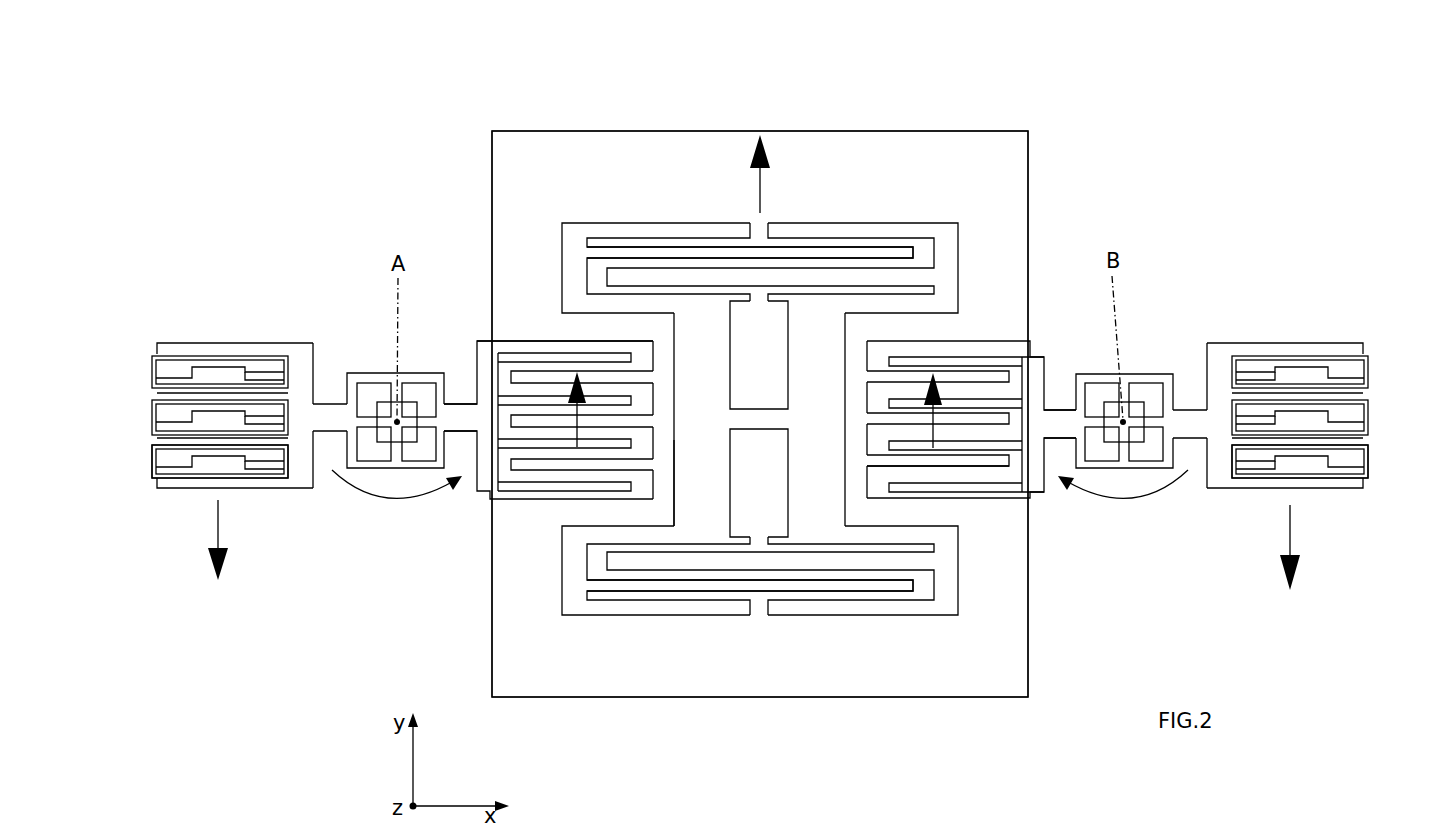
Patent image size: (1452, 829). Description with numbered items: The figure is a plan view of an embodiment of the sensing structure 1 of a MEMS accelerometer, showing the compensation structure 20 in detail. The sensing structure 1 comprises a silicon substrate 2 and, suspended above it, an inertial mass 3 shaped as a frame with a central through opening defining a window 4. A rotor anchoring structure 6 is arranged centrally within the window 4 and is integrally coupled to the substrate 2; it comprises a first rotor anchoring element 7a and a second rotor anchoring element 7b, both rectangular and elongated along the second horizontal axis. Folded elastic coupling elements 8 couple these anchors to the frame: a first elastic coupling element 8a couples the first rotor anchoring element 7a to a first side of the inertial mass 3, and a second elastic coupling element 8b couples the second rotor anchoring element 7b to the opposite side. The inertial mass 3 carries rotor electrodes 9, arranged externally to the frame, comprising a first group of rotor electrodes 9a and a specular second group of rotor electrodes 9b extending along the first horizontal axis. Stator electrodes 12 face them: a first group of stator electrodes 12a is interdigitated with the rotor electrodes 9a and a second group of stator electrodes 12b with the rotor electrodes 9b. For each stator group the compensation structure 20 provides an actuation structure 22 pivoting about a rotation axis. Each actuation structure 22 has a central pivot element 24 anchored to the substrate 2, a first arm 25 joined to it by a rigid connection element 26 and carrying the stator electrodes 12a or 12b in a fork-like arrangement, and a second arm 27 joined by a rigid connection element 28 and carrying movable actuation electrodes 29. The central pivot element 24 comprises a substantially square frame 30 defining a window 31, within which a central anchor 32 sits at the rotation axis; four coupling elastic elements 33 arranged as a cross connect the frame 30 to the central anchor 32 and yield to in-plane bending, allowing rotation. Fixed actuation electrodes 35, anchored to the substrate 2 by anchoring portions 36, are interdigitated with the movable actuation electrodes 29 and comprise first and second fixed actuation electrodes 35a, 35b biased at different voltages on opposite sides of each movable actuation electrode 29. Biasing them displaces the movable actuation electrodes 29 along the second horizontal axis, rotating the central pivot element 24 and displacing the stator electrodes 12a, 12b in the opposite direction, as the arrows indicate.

The sensing structure 1 is at (1055, 163).
The substrate 2 is at (820, 430).
The inertial mass 3 is at (920, 136).
The window 4 is at (943, 285).
The rotor anchoring structure 6 is at (805, 452).
The first rotor anchoring element 7a is at (740, 356).
The second rotor anchoring element 7b is at (741, 496).
The elastic coupling element 8 is at (810, 240).
The first elastic coupling element 8a is at (845, 248).
The second elastic coupling element 8b is at (860, 598).
The rotor electrodes 9 is at (982, 476).
The first group of rotor electrodes 9a is at (628, 427).
The second group of rotor electrodes 9b is at (878, 417).
The stator electrodes 12 is at (546, 344).
The first group of stator electrodes 12a is at (528, 350).
The second group of stator electrodes 12b is at (1010, 402).
The compensation structure 20 is at (206, 334).
The actuation structure 22 is at (374, 452).
The central pivot element 24 is at (385, 377).
The first arm 25 is at (485, 478).
The rigid connection element 26 is at (458, 402).
The second arm 27 is at (308, 380).
The rigid connection element 28 is at (332, 404).
The movable actuation electrodes 29 is at (228, 346).
The frame 30 is at (366, 378).
The window 31 is at (362, 448).
The central anchor 32 is at (400, 395).
The coupling elastic elements 33 is at (405, 458).
The fixed actuation electrodes 35 is at (143, 452).
The first fixed actuation electrode 35a is at (150, 358).
The second fixed actuation electrode 35b is at (152, 392).
The anchoring portion 36 is at (263, 356).